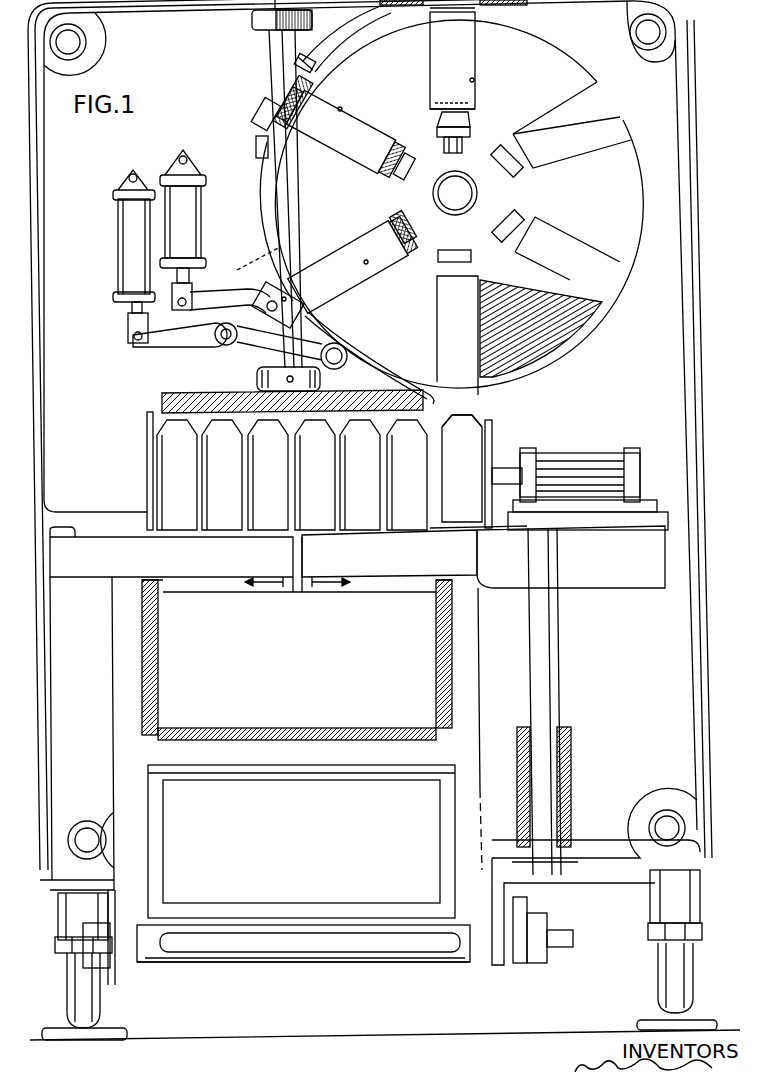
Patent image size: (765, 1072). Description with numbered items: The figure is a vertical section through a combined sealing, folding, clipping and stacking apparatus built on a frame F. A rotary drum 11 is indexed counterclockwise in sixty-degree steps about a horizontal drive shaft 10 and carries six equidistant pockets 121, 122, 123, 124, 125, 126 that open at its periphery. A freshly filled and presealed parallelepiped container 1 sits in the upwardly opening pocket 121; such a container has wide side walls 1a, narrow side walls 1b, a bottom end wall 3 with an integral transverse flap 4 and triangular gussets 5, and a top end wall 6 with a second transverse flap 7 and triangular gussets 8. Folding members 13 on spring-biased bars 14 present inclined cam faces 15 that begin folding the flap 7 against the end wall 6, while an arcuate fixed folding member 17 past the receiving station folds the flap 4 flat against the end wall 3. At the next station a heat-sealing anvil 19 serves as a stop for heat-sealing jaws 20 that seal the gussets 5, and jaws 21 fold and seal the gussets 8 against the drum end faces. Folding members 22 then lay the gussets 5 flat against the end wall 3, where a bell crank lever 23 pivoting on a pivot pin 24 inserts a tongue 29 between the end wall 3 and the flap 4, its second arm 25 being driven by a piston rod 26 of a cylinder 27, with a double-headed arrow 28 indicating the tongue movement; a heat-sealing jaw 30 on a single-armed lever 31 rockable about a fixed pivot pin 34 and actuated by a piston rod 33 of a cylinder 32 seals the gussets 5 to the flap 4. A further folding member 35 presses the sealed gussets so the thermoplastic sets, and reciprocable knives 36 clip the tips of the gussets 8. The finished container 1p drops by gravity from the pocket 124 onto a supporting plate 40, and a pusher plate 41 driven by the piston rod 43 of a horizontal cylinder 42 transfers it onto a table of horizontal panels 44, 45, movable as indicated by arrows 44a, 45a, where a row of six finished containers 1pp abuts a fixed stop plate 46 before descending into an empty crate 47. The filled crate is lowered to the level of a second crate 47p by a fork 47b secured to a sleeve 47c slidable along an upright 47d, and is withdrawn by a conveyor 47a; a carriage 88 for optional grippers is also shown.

The frame F is at (702, 268).
The parallelepiped container 1 is at (458, 70).
The wide rectangular side wall 1a is at (480, 494).
The narrow rectangular side wall 1b is at (307, 120).
The finished parallelepiped container 1p is at (487, 425).
The finished containers 1pp is at (292, 475).
The bottom end wall 3 is at (468, 527).
The transverse flap 4 is at (455, 8).
The triangular gussets 5 is at (281, 90).
The top end wall 6 is at (475, 100).
The second transverse flap 7 is at (431, 108).
The triangular gussets 8 is at (388, 174).
The horizontal drive shaft 10 is at (478, 196).
The rotary drum 11 is at (628, 195).
The pocket 121 is at (473, 78).
The pocket 122 is at (342, 109).
The pocket 123 is at (368, 265).
The pocket 124 is at (442, 300).
The pocket 125 is at (587, 289).
The pocket 126 is at (574, 101).
The folding members 13 is at (471, 133).
The spring-biased bars 14 is at (462, 150).
The inclined cam face 15 is at (468, 118).
The arcuate fixed folding member 17 is at (312, 54).
The heat-sealing anvil 19 is at (263, 117).
The heat-sealing jaws 20 is at (307, 88).
The heat-sealing jaws 21 is at (373, 173).
The folding members 22 is at (257, 144).
The bell crank lever 23 is at (262, 273).
The horizontal pivot pin 24 is at (217, 344).
The second arm 25 is at (160, 340).
The piston rod 26 is at (130, 315).
The hydraulic or pneumatic cylinder 27 is at (127, 218).
The double-headed arrow 28 is at (268, 256).
The tongue 29 is at (297, 270).
The heat-sealing jaw 30 is at (266, 340).
The single-armed lever 31 is at (203, 302).
The hydraulic or pneumatic cylinder 32 is at (198, 196).
The piston rod 33 is at (181, 313).
The fixed pivot pin 34 is at (331, 366).
The further folding member 35 is at (309, 310).
The reciprocable knives 36 is at (413, 230).
The horizontal supporting plate 40 is at (486, 525).
The pusher plate 41 is at (494, 424).
The horizontal cylinder 42 is at (575, 465).
The piston rod 43 is at (510, 467).
The horizontal panel 44 is at (425, 537).
The arrow 44a is at (310, 583).
The horizontal panel 45 is at (240, 537).
The arrow 45a is at (273, 583).
The fixed stop plate 46 is at (150, 430).
The crate 47 is at (162, 680).
The second crate 47p is at (167, 863).
The conveyor 47a is at (173, 972).
The fork 47b is at (345, 950).
The sleeve 47c is at (567, 778).
The upright 47d is at (545, 667).
The gripper carriage 88 is at (163, 402).